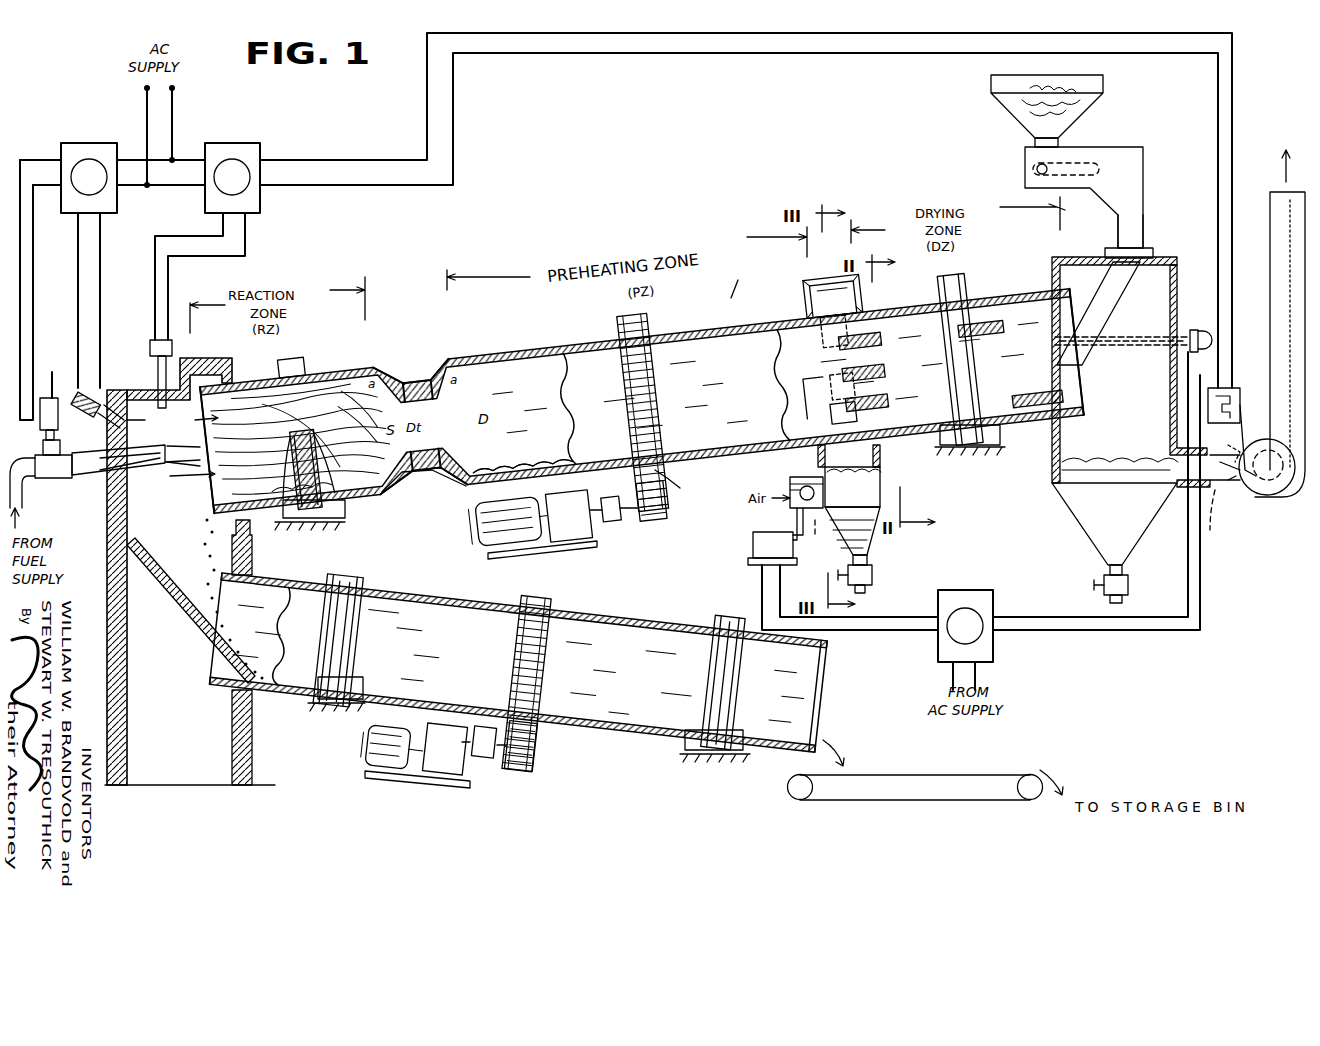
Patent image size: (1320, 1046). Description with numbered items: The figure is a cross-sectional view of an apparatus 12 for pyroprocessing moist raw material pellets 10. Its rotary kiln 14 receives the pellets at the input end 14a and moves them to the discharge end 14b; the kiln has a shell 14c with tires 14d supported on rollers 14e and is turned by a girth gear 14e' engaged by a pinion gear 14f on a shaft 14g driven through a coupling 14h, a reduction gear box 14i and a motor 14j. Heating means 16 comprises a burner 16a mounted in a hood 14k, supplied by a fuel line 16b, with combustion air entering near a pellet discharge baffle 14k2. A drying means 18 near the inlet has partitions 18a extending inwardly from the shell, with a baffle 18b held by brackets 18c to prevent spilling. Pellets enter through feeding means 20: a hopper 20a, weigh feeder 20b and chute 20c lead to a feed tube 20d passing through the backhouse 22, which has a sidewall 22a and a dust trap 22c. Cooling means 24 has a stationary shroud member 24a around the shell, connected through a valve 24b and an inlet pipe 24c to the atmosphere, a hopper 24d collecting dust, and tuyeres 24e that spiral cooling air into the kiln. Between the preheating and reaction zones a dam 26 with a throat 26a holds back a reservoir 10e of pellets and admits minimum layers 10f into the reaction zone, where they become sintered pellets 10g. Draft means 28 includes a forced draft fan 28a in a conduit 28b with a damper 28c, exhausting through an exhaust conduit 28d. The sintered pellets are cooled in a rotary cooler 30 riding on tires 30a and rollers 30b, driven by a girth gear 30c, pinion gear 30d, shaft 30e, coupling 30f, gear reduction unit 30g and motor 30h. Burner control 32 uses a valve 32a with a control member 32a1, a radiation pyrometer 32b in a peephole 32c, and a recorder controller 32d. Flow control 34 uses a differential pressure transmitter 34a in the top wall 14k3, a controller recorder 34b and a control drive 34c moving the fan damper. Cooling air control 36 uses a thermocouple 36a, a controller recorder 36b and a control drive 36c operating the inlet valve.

The raw material pellets 10 is at (1063, 90).
The reservoir of raw material pellets 10e is at (503, 452).
The minimum layers of raw material pellets 10f is at (398, 492).
The sintered pellets 10g is at (200, 552).
The apparatus for pyroprocessing raw material pellets 12 is at (742, 279).
The rotary kiln 14 is at (755, 315).
The input end 14a is at (1086, 354).
The discharge end 14b is at (210, 502).
The shell 14c is at (742, 383).
The tires 14d is at (292, 352).
The rollers 14e is at (641, 484).
The girth gear 14e' is at (615, 407).
The pinion gear 14f is at (672, 490).
The shaft 14g is at (632, 512).
The coupling 14h is at (614, 524).
The reduction gear box 14i is at (572, 540).
The motor 14j is at (508, 546).
The hood 14k is at (198, 360).
The pellet discharge baffle 14k2 is at (195, 604).
The top wall 14k3 is at (140, 372).
The heating means 16 is at (82, 478).
The burner 16a is at (195, 470).
The fuel line 16b is at (24, 490).
The drying means 18 is at (1029, 267).
The partitions 18a is at (912, 330).
The baffle 18b is at (868, 378).
The brackets 18c is at (916, 376).
The feeding means 20 is at (1129, 139).
The hopper 20a is at (1010, 110).
The weigh feeder 20b is at (1030, 162).
The chute 20c is at (1144, 212).
The feed tube 20d is at (1110, 312).
The backhouse 22 is at (1077, 518).
The sidewall 22a is at (1180, 262).
The dust trap 22c is at (1124, 586).
The cooling means 24 is at (890, 486).
The stationary shroud member 24a is at (866, 292).
The valve 24b is at (805, 532).
The inlet pipe 24c is at (790, 492).
The hopper 24d is at (872, 548).
The tuyeres 24e is at (836, 345).
The dam 26 is at (443, 360).
The throat 26a is at (414, 380).
The means for moving heated fluid 28 is at (1305, 495).
The forced draft fan 28a is at (1258, 495).
The conduit 28b is at (1219, 521).
The damper 28c is at (1226, 498).
The exhaust conduit 28d is at (1275, 200).
The rotary induced-type air cooler 30 is at (438, 594).
The tires 30a is at (348, 576).
The rollers 30b is at (326, 704).
The girth gear 30c is at (556, 600).
The pinion gear 30d is at (540, 752).
The shaft 30e is at (498, 770).
The coupling 30f is at (484, 760).
The gear reduction unit 30g is at (440, 772).
The motor 30h is at (372, 764).
The burner control means 32 is at (118, 226).
The valve 32a is at (60, 436).
The control member 32a1 is at (52, 398).
The radiation pyrometer 32b is at (78, 376).
The peephole 32c is at (153, 419).
The recorder controller 32d is at (90, 144).
The heated fluid flow control means 34 is at (181, 297).
The differential pressure transmitter 34a is at (150, 346).
The controller recorder 34b is at (248, 144).
The modulating electric control drive 34c is at (1232, 388).
The cooling air control structure 36 is at (1205, 322).
The thermocouple 36a is at (1142, 346).
The controller recorder 36b is at (982, 592).
The modulating electric control drive 36c is at (753, 545).